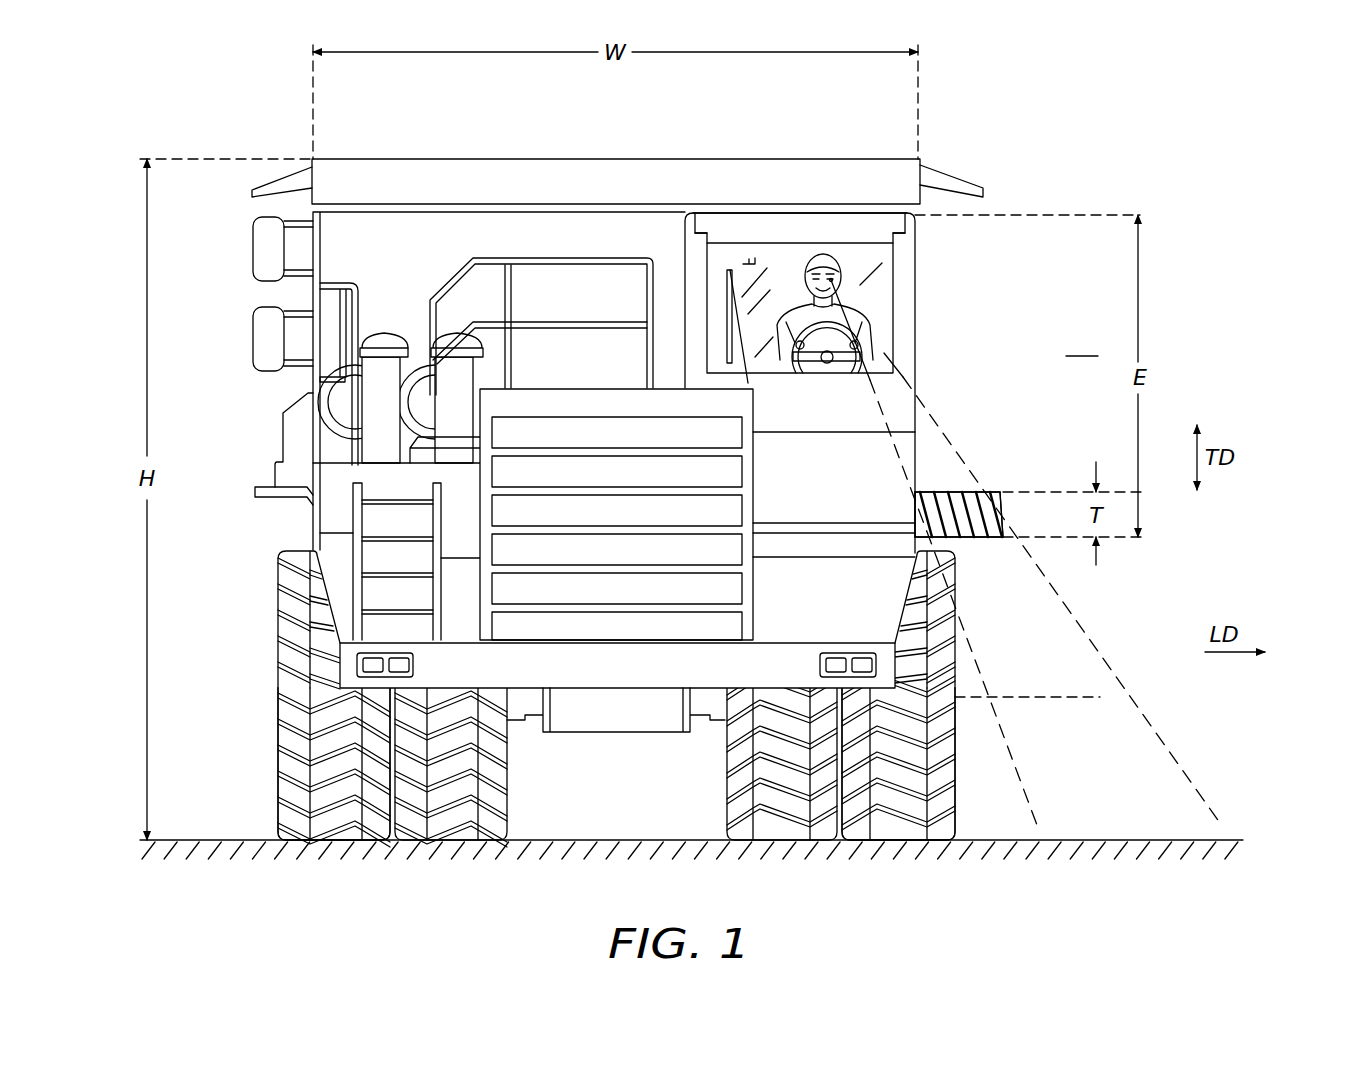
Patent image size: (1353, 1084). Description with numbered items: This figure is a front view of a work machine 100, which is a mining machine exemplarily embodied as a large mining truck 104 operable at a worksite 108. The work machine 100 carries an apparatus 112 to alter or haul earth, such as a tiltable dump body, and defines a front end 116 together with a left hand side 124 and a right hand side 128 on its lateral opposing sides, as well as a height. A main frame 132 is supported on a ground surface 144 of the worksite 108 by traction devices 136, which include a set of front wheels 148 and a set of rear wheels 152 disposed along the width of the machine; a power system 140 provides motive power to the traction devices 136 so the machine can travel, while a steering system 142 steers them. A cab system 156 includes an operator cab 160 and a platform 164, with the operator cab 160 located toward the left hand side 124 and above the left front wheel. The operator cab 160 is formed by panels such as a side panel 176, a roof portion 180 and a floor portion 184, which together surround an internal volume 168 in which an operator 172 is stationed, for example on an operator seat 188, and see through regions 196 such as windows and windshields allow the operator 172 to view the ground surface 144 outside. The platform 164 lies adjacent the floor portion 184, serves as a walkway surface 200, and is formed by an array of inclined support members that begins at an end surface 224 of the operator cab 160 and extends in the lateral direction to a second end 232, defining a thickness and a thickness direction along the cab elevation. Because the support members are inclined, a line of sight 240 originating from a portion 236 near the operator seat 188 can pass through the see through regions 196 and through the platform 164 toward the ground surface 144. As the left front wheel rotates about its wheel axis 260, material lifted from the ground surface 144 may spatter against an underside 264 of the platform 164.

The work machine 100 is at (205, 128).
The large mining truck 104 is at (1003, 170).
The worksite 108 is at (1082, 344).
The apparatus 112 is at (372, 159).
The front end 116 is at (549, 596).
The left hand side 124 is at (942, 354).
The right hand side 128 is at (243, 425).
The main frame 132 is at (930, 720).
The traction devices 136 is at (283, 826).
The power system 140 is at (316, 514).
The steering system 142 is at (752, 300).
The ground surface 144 is at (1158, 840).
The set of front wheels 148 is at (280, 812).
The set of rear wheels 152 is at (508, 822).
The cab system 156 is at (803, 205).
The operator cab 160 is at (835, 213).
The platform 164 is at (968, 486).
The internal volume 168 is at (749, 262).
The operator 172 is at (840, 257).
The side panel 176 is at (907, 285).
The roof portion 180 is at (865, 213).
The floor portion 184 is at (880, 535).
The operator seat 188 is at (868, 310).
The see through regions 196 is at (780, 290).
The walkway surface 200 is at (955, 488).
The end surface 224 is at (932, 488).
The second end 232 is at (999, 517).
The portion 236 is at (797, 262).
The line of sight 240 is at (1174, 748).
The wheel axis 260 is at (1065, 698).
The underside 264 is at (985, 540).